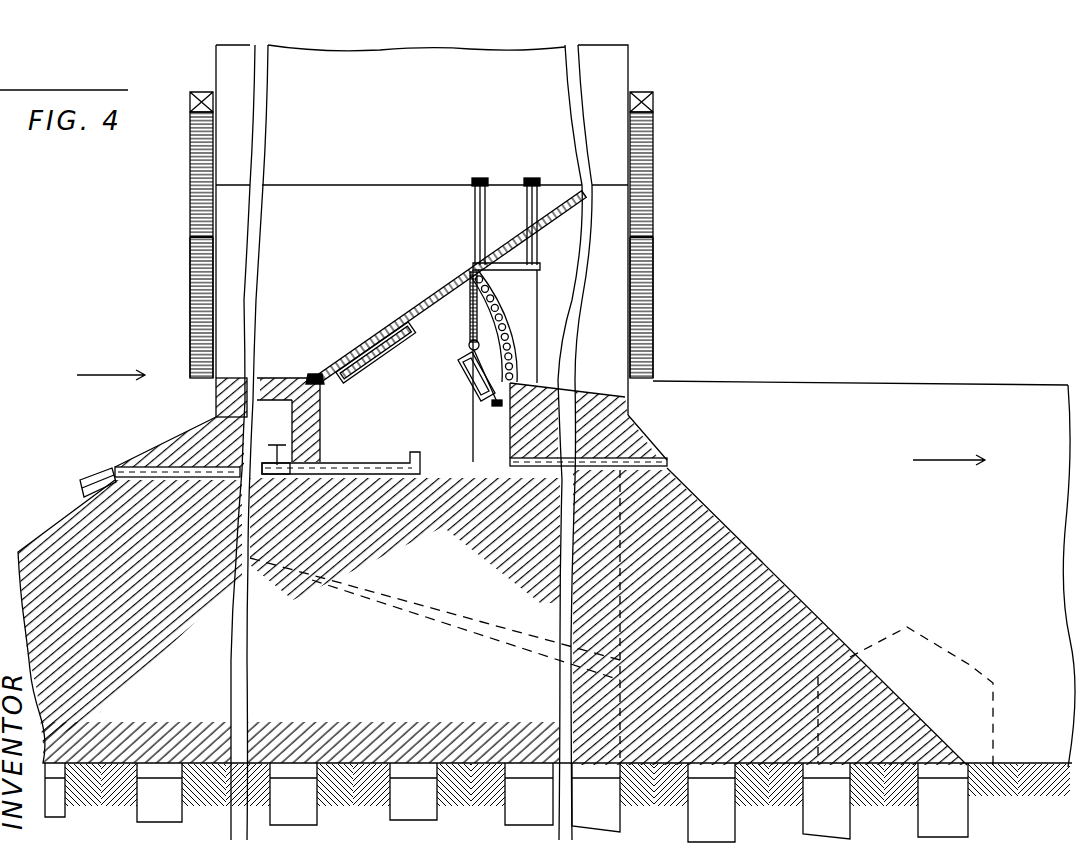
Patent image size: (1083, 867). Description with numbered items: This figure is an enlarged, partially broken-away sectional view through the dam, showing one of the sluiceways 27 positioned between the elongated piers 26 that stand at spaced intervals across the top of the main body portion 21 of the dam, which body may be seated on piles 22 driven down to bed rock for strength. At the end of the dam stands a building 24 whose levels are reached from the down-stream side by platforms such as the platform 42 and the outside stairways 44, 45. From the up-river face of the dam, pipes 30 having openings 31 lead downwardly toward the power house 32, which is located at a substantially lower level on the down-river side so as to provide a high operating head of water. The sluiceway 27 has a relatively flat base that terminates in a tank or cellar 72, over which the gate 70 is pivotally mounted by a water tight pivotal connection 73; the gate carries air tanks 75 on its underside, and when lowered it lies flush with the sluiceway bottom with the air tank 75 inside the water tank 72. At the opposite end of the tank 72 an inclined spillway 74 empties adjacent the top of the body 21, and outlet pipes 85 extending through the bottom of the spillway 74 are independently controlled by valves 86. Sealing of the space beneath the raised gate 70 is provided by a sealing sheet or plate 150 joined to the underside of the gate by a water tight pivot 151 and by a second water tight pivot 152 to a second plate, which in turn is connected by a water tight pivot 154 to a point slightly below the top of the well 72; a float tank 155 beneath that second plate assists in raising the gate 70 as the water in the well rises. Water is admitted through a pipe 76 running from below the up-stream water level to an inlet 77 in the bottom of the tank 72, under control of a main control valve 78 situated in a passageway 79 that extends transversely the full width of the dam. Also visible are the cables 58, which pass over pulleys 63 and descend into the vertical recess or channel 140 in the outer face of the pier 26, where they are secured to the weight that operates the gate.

The main body portion 21 is at (735, 548).
The piles 22 is at (950, 800).
The building 24 is at (613, 137).
The elongated piers 26 is at (613, 270).
The sluiceways 27 is at (230, 378).
The pipes 30 is at (420, 589).
The openings 31 is at (84, 484).
The power house 32 is at (970, 665).
The platform 42 is at (683, 231).
The outside stairway 44 is at (670, 313).
The outside stairway 45 is at (190, 152).
The cables 58 is at (528, 213).
The pulleys 63 is at (479, 178).
The gate 70 is at (364, 352).
The tank or cellar 72 is at (355, 476).
The water tight pivotal connection 73 is at (313, 374).
The inclined spillway 74 is at (589, 395).
The air tanks 75 is at (378, 366).
The pipe 76 is at (125, 467).
The inlet 77 is at (418, 462).
The main control valve 78 is at (280, 447).
The passageway 79 is at (268, 400).
The outlet pipes 85 is at (670, 463).
The valves 86 is at (512, 456).
The vertical recess or channel 140 is at (510, 205).
The sealing sheet or plate 150 is at (470, 319).
The water tight pivot 151 is at (468, 290).
The second water tight pivot 152 is at (469, 345).
The water tight pivot 154 is at (491, 407).
The float tank 155 is at (474, 381).